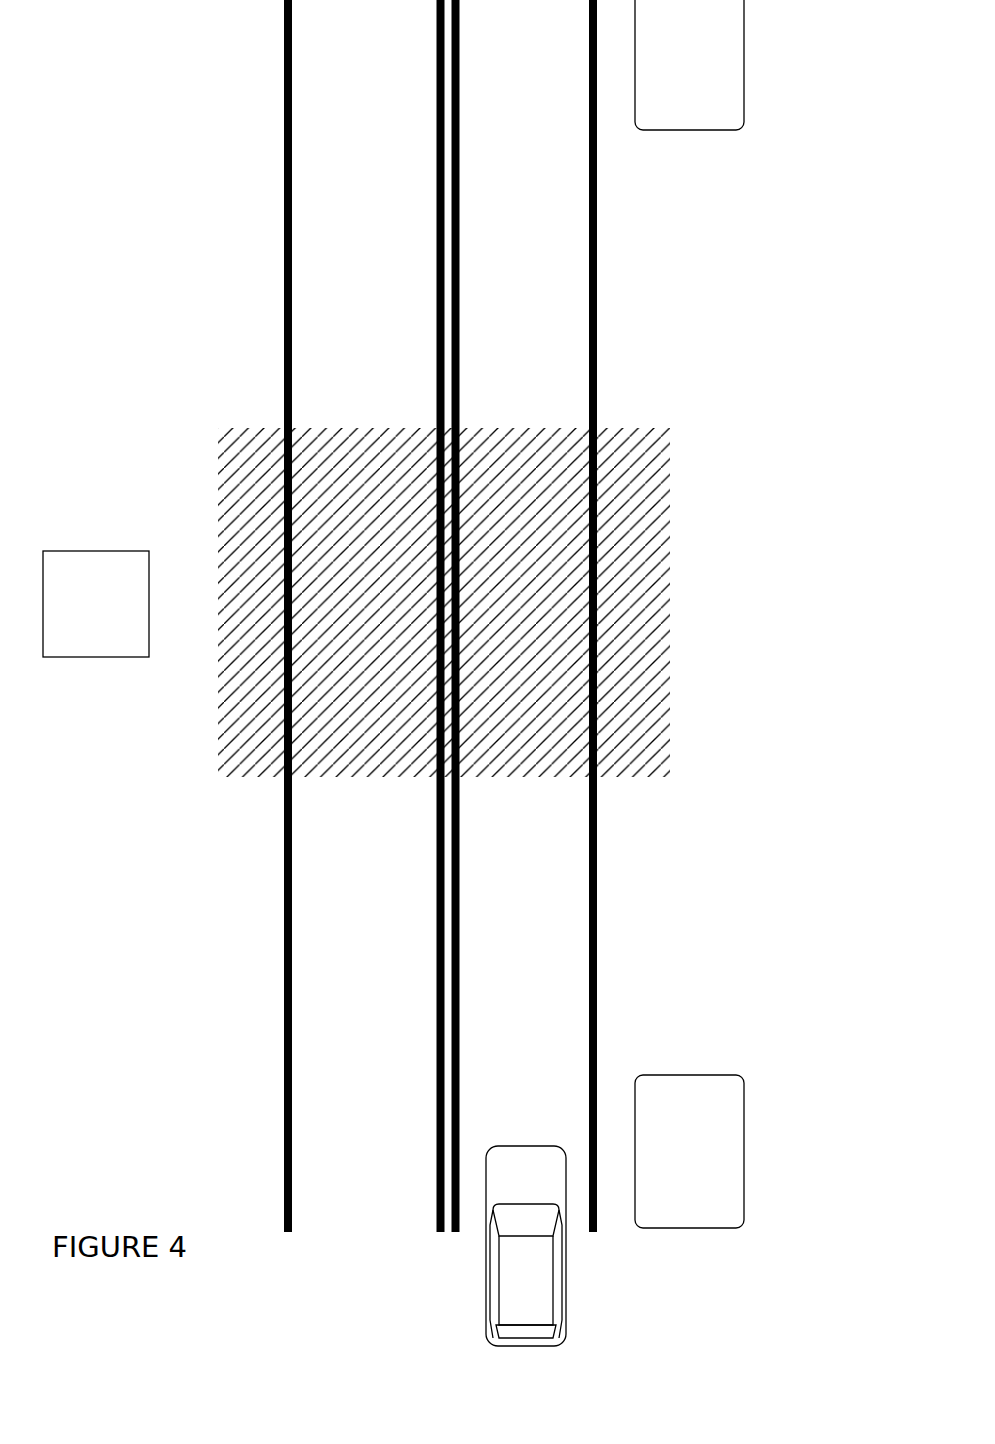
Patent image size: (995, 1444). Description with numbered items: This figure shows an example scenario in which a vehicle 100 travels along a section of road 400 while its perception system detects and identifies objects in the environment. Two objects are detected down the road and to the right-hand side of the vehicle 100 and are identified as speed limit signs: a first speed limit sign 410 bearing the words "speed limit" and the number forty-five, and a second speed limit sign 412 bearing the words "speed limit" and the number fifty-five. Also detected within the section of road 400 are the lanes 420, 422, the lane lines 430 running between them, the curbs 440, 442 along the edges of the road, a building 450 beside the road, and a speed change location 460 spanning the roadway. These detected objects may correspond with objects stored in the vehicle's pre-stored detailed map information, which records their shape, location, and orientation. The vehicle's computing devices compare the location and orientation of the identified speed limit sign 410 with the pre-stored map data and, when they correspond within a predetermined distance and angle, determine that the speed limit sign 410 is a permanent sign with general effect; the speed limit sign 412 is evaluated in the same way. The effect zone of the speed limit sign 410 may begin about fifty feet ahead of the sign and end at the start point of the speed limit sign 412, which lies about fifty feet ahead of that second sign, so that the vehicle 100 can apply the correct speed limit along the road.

The vehicle 100 is at (510, 1257).
The section of road 400 is at (132, 1221).
The speed limit sign 410 is at (744, 1158).
The speed limit sign 412 is at (744, 62).
The lane 420 is at (575, 845).
The lane 422 is at (304, 847).
The lane lines 430 is at (436, 957).
The curb 440 is at (597, 985).
The curb 442 is at (283, 978).
The building 450 is at (113, 614).
The speed change location 460 is at (653, 619).